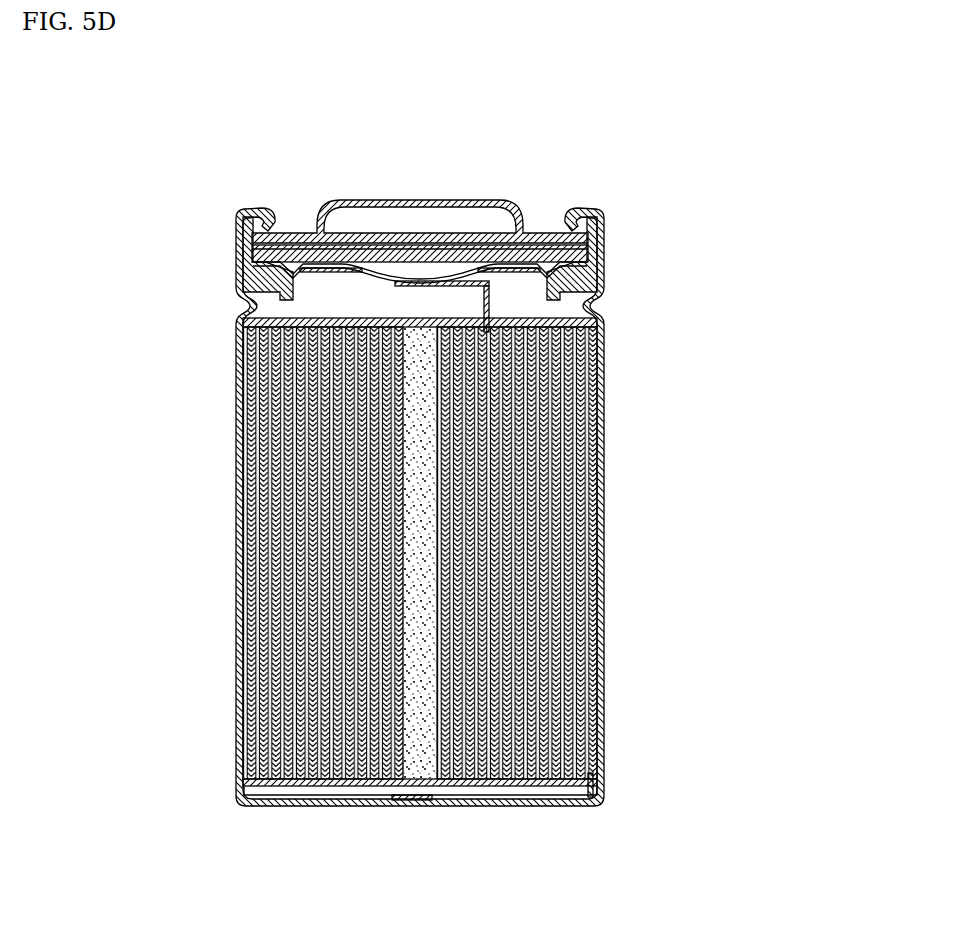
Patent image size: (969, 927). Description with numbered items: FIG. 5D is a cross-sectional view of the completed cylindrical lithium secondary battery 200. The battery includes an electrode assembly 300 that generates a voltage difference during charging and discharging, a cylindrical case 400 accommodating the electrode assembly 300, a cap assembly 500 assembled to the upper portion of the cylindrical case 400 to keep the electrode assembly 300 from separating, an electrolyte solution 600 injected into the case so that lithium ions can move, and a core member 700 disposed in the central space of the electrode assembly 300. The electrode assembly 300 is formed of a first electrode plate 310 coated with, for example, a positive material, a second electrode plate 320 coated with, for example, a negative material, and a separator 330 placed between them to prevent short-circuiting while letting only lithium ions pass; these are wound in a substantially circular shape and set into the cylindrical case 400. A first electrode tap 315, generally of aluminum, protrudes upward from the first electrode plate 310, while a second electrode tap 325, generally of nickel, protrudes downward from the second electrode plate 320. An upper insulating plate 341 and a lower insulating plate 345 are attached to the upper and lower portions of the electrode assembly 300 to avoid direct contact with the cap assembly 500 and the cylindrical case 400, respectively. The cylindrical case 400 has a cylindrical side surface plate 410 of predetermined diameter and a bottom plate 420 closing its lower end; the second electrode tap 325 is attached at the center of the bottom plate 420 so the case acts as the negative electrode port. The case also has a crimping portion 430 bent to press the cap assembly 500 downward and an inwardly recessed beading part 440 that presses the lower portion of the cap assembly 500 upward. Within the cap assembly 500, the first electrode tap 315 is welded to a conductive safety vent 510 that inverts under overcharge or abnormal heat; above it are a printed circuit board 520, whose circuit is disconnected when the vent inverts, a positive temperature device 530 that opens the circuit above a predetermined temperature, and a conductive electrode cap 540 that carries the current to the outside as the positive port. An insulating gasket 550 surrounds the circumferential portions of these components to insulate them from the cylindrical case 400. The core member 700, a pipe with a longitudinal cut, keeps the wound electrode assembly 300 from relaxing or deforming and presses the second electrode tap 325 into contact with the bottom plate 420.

The cylindrical lithium secondary battery 200 is at (634, 187).
The electrode assembly 300 is at (720, 300).
The first electrode plate 310 is at (590, 430).
The first electrode tap 315 is at (492, 289).
The second electrode plate 320 is at (588, 358).
The second electrode tap 325 is at (507, 803).
The separator 330 is at (590, 400).
The upper insulating plate 341 is at (595, 312).
The lower insulating plate 345 is at (595, 793).
The cylindrical case 400 is at (118, 283).
The cylindrical side surface plate 410 is at (236, 355).
The bottom plate 420 is at (260, 817).
The crimping portion 430 is at (235, 232).
The beading part 440 is at (236, 299).
The cap assembly 500 is at (338, 125).
The conductive safety vent 510 is at (388, 272).
The printed circuit board 520 is at (452, 260).
The positive temperature device 530 is at (493, 243).
The conductive electrode cap 540 is at (343, 272).
The insulating gasket 550 is at (556, 222).
The electrolyte solution 600 is at (423, 785).
The core member 700 is at (437, 787).